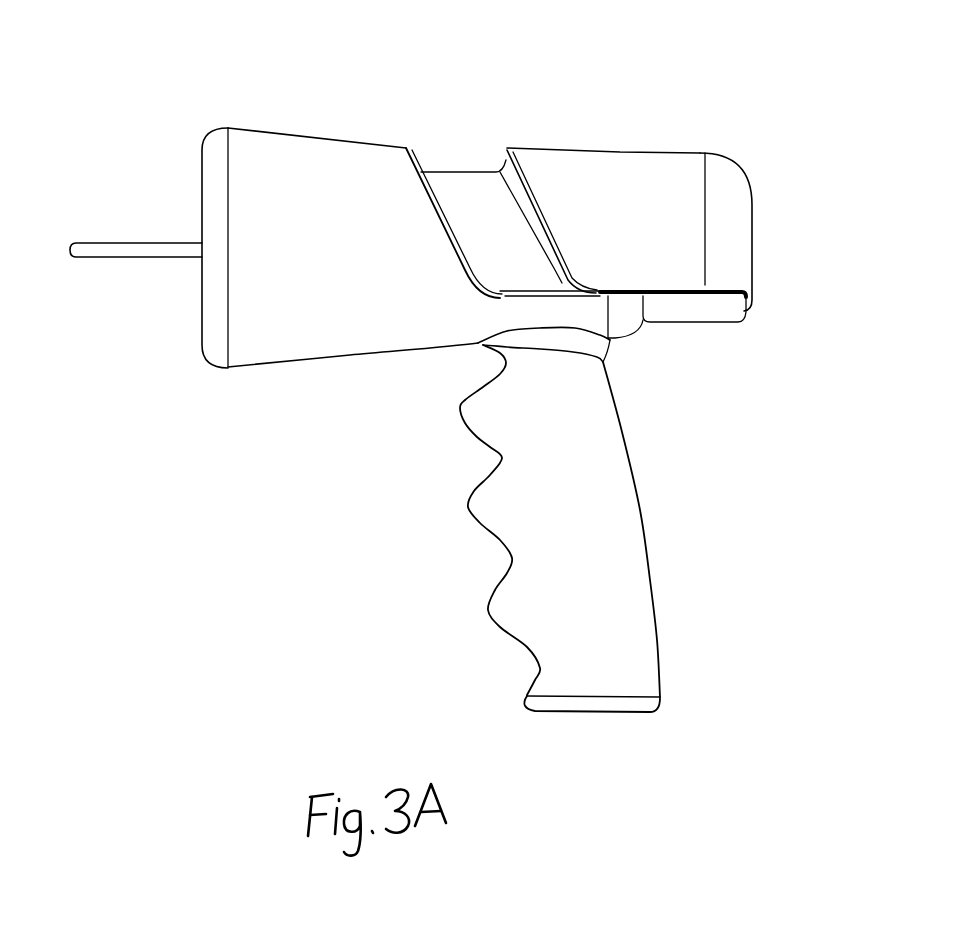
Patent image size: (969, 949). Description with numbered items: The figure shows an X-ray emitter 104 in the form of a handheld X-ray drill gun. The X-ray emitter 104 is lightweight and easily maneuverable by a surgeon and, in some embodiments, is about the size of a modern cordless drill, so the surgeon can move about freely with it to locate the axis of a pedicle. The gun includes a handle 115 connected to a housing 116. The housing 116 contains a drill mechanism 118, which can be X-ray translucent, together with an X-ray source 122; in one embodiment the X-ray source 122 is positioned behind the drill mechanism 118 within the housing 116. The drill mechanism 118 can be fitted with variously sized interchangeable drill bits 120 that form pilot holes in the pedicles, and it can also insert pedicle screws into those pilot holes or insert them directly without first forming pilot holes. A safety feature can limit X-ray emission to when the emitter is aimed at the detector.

The X-ray emitter 104 is at (447, 184).
The handle 115 is at (780, 480).
The housing 116 is at (420, 50).
The drill mechanism 118 is at (184, 247).
The drill bit 120 is at (114, 257).
The X-ray source 122 is at (579, 192).